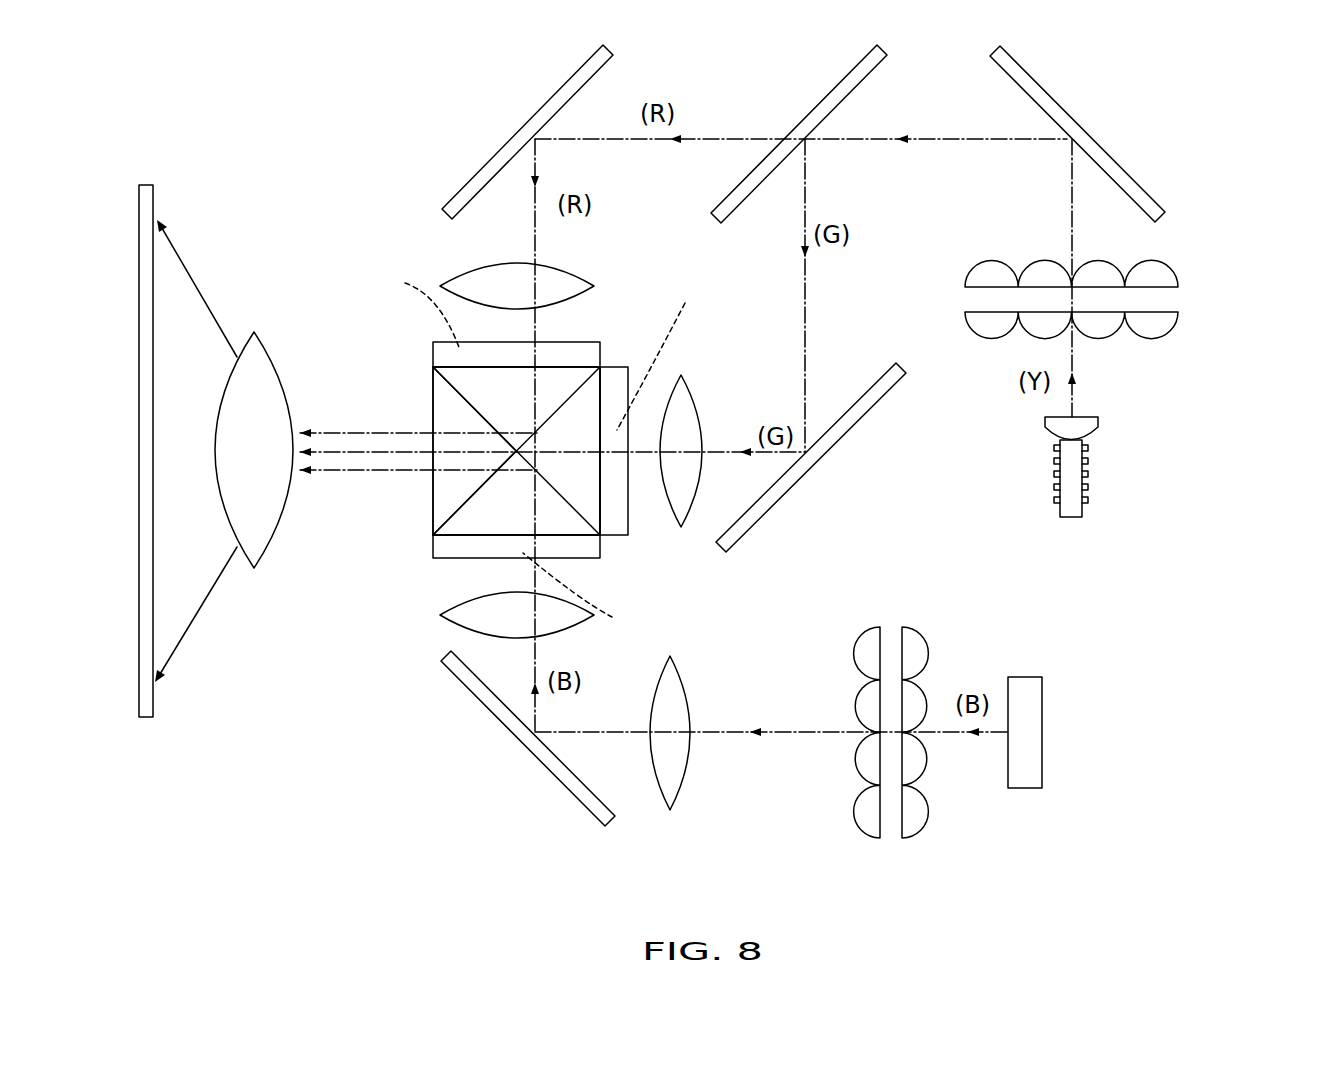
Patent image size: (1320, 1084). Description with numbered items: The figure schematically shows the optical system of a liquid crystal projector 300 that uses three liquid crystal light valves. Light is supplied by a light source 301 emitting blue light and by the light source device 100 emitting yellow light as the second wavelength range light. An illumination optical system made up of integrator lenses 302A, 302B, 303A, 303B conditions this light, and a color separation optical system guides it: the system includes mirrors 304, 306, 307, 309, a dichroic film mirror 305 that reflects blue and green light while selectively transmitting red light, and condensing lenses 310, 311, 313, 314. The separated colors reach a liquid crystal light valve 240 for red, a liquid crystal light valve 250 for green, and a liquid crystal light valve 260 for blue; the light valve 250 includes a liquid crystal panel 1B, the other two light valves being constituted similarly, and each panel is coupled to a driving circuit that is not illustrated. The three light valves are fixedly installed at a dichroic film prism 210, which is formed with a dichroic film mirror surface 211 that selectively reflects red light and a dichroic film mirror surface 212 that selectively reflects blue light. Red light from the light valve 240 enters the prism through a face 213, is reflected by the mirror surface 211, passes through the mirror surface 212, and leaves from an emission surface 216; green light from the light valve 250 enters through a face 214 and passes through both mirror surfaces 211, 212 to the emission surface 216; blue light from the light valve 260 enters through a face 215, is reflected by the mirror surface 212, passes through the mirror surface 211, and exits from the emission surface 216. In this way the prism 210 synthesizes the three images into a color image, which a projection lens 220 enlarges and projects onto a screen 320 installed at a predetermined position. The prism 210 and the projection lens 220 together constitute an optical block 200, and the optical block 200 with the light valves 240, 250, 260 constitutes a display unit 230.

The liquid crystal projector 300 is at (1192, 116).
The light source device 100 is at (1070, 518).
The optical block 200 is at (297, 590).
The dichroic film prism 210 is at (440, 507).
The dichroic film mirror surface 211 is at (467, 492).
The dichroic film mirror surface 212 is at (458, 392).
The face 213 is at (460, 352).
The face 214 is at (595, 513).
The face 215 is at (468, 532).
The emission surface 216 is at (432, 422).
The projection lens 220 is at (260, 363).
The display unit 230 is at (612, 295).
The liquid crystal light valve 240 is at (437, 353).
The liquid crystal light valve 250 is at (617, 383).
The liquid crystal light valve 260 is at (593, 552).
The liquid crystal panel 1B is at (544, 458).
The light source 301 is at (1023, 675).
The integrator lens 302A is at (1167, 325).
The integrator lens 302B is at (1167, 277).
The integrator lens 303A is at (915, 645).
The integrator lens 303B is at (868, 645).
The mirror 304 is at (1048, 102).
The dichroic film mirror 305 is at (825, 100).
The mirror 306 is at (552, 97).
The mirror 307 is at (853, 403).
The mirror 309 is at (495, 710).
The condensing lens 310 is at (462, 282).
The condensing lens 311 is at (687, 410).
The condensing lens 313 is at (678, 790).
The condensing lens 314 is at (462, 620).
The screen 320 is at (143, 715).